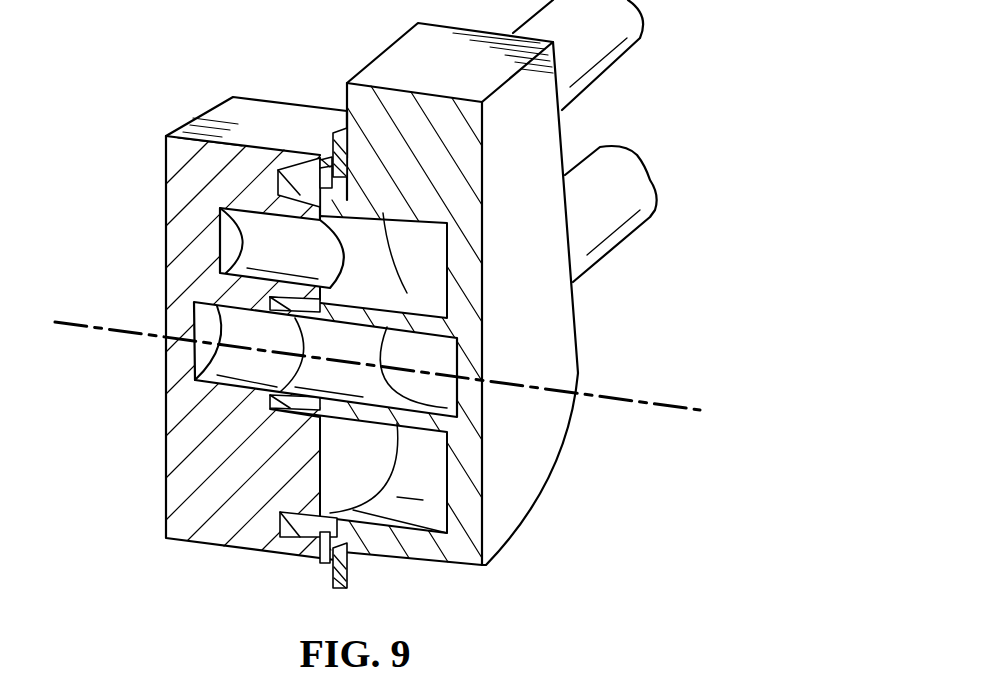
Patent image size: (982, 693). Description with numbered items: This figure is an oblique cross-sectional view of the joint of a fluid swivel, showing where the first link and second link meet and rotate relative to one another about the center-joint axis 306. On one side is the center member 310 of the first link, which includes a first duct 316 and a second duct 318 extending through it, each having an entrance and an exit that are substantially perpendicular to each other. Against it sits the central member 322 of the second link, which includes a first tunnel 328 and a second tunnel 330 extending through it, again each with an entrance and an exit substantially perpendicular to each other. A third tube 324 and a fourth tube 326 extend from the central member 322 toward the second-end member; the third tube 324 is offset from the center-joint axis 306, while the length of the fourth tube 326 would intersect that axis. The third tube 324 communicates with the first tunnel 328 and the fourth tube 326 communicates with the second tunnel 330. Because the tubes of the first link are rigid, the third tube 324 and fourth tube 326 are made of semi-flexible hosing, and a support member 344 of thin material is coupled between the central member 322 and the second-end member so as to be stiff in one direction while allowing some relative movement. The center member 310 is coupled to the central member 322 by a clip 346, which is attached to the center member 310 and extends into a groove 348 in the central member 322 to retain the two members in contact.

The center-joint axis 306 is at (70, 322).
The center member 310 is at (175, 447).
The first duct 316 is at (258, 247).
The second duct 318 is at (207, 357).
The central member 322 is at (550, 427).
The third tube 324 is at (603, 75).
The fourth tube 326 is at (620, 247).
The first tunnel 328 is at (423, 512).
The second tunnel 330 is at (367, 345).
The support member 344 is at (332, 147).
The clip 346 is at (317, 167).
The groove 348 is at (317, 532).